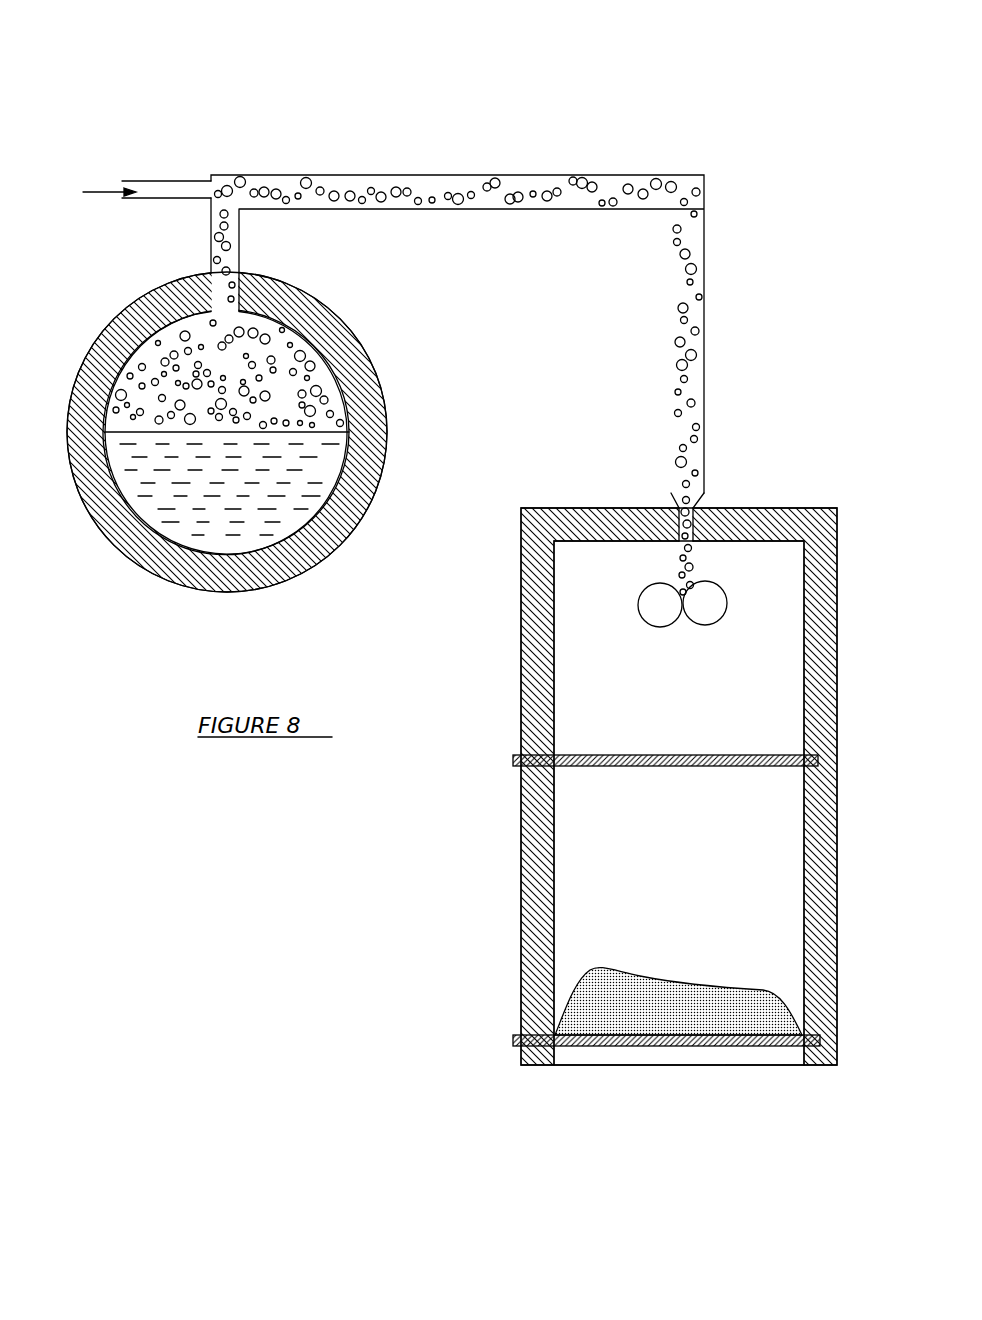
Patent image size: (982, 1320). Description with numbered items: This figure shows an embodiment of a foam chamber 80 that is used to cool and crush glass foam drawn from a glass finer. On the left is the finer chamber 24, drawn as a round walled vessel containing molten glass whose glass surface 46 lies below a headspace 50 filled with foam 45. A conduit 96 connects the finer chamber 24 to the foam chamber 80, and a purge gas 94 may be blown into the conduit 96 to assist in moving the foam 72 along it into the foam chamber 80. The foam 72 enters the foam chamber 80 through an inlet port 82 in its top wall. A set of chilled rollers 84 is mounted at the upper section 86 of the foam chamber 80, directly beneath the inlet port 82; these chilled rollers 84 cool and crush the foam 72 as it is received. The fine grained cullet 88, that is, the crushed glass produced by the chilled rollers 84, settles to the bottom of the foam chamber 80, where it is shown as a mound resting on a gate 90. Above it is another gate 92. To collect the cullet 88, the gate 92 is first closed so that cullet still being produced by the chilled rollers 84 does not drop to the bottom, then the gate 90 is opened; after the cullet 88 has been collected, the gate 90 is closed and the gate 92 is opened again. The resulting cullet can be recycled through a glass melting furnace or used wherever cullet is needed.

The finer chamber 24 is at (160, 535).
The foam 45 is at (162, 372).
The glass surface 46 is at (330, 430).
The headspace 50 is at (298, 348).
The foam 72 is at (693, 568).
The foam chamber 80 is at (521, 553).
The inlet port 82 is at (697, 510).
The chilled rollers 84 is at (643, 617).
The upper section 86 is at (610, 550).
The fine grained cullet 88 is at (740, 1025).
The gate 90 is at (519, 1047).
The gate 92 is at (513, 763).
The purge gas 94 is at (130, 192).
The conduit 96 is at (438, 173).